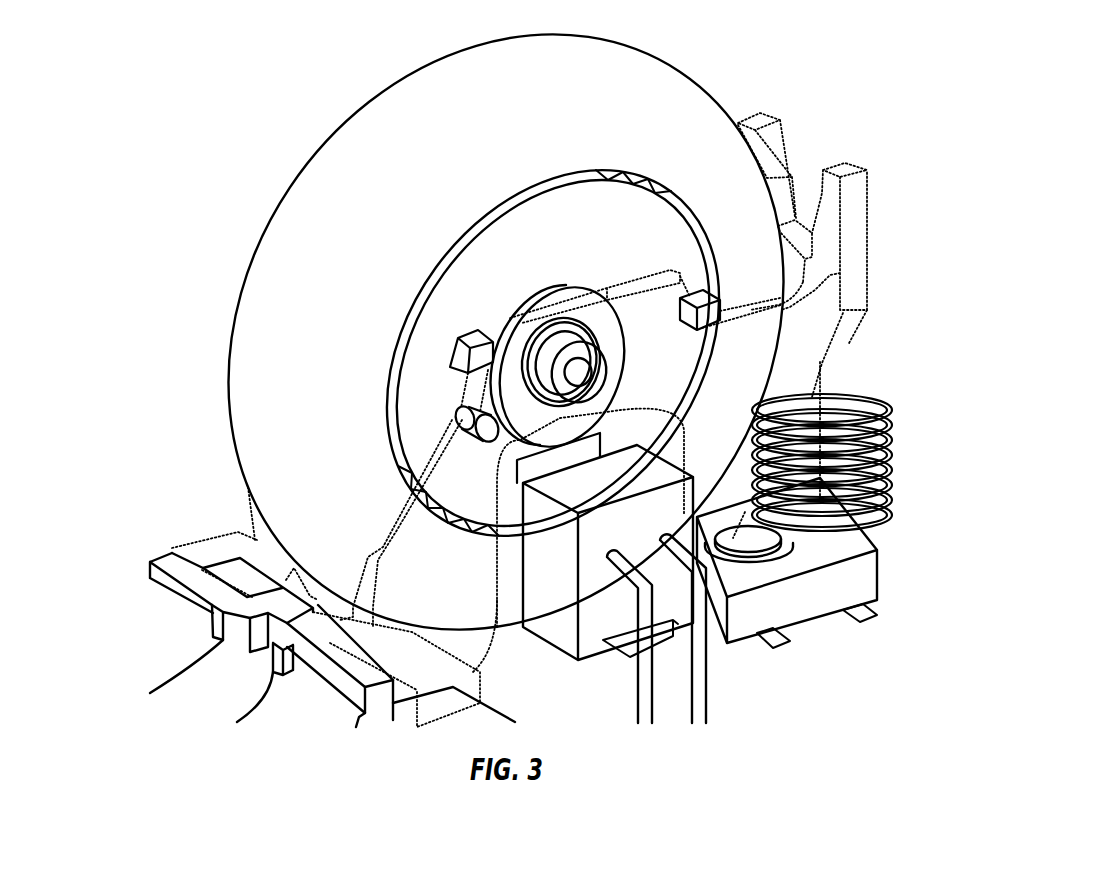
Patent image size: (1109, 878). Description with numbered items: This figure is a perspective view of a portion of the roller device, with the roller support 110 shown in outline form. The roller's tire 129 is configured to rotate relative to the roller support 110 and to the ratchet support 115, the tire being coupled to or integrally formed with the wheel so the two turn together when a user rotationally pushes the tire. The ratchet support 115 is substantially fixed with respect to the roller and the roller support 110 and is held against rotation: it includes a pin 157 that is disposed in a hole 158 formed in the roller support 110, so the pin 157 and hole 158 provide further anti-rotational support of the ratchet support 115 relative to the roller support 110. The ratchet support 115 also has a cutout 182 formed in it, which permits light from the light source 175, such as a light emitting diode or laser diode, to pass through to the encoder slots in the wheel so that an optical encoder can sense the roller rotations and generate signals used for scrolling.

The tire 129 is at (511, 124).
The ratchet support 115 is at (576, 249).
The roller support 110 is at (665, 290).
The cutout 182 is at (567, 455).
The pin 157 is at (467, 410).
The hole 158 is at (493, 440).
The light source 175 is at (658, 536).